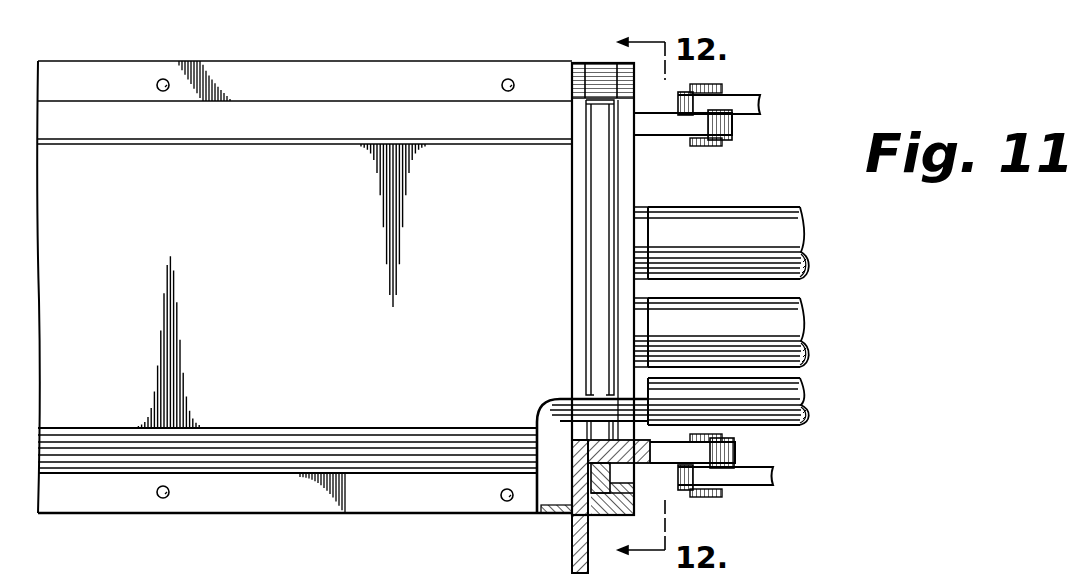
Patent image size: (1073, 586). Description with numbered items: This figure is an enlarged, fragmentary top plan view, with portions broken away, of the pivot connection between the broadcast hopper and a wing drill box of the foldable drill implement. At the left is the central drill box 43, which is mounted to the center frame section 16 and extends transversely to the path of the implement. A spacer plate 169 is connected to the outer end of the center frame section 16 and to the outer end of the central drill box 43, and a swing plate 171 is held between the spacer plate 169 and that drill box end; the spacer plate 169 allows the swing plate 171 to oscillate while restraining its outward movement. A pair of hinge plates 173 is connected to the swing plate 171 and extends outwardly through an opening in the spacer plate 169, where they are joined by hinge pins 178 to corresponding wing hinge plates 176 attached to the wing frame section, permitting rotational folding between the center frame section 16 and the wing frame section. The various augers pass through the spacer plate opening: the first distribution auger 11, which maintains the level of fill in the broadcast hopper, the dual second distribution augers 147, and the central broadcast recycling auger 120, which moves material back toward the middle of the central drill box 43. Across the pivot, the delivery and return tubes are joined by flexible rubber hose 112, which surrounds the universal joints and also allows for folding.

The central drill box 43 is at (316, 298).
The spacer plate 169 is at (625, 160).
The swing plate 171 is at (598, 126).
The center frame section 16 is at (576, 550).
The central broadcast recycling auger 120 is at (642, 401).
The dual second distribution augers 147 is at (645, 237).
The first distribution auger 11 is at (640, 327).
The flexible rubber hose 112 is at (744, 213).
The hinge plates 173 is at (733, 126).
The wing hinge plates 176 is at (748, 109).
The hinge pins 178 is at (720, 93).